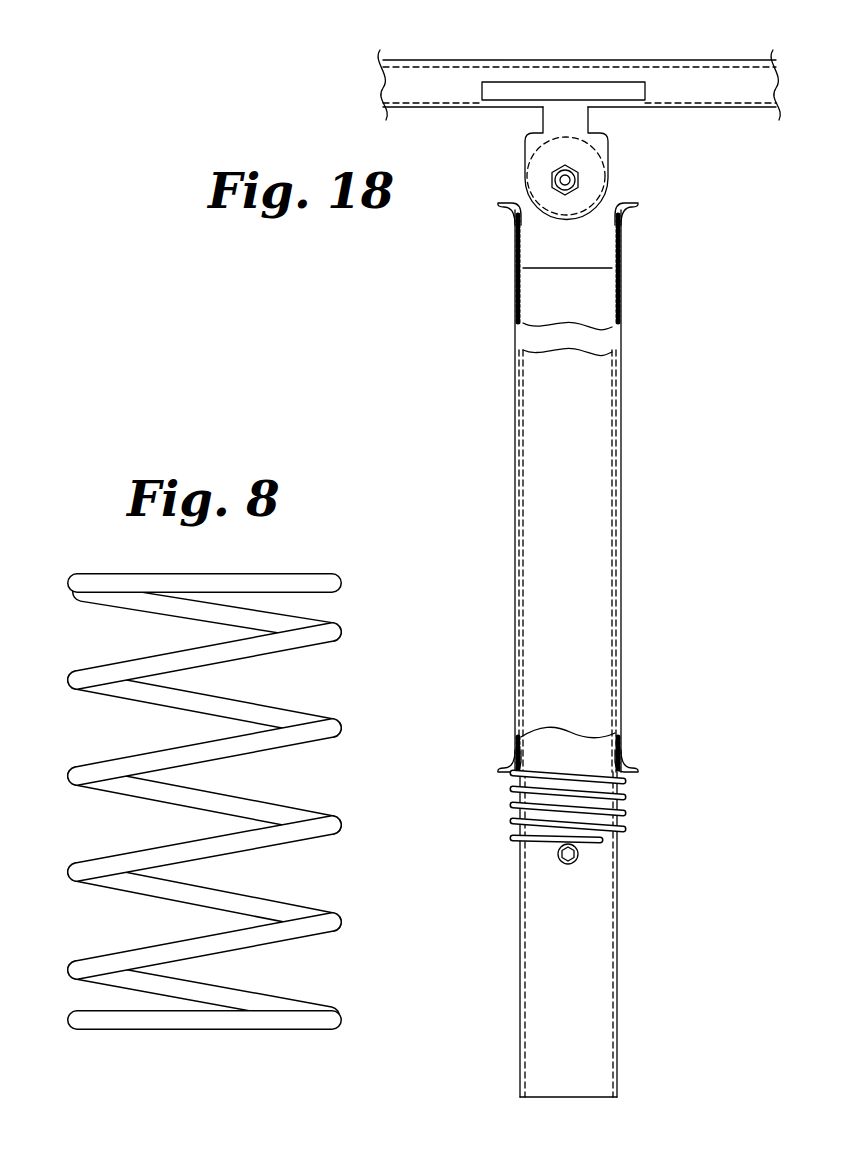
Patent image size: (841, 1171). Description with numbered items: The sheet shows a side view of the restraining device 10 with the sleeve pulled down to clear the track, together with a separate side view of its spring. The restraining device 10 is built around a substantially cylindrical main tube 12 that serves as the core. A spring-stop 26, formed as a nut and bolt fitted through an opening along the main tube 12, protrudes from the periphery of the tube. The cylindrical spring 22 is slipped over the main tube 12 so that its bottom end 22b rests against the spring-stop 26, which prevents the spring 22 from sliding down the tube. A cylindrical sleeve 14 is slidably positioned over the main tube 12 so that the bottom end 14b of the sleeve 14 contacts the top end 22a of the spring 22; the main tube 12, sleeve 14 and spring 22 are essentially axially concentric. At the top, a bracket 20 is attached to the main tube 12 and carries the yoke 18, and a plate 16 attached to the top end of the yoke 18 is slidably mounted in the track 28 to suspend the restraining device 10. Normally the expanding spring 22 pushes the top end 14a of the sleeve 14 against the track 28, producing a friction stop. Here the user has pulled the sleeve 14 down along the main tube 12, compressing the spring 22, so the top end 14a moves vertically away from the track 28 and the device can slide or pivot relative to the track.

In FIG. 18, the restraining device 10 is at (687, 921).
In FIG. 18, the main tube 12 is at (597, 335).
In FIG. 18, the sleeve 14 is at (508, 587).
In FIG. 18, the top end of the sleeve 14a is at (507, 206).
In FIG. 18, the bottom end of the sleeve 14b is at (512, 770).
In FIG. 18, the plate 16 is at (474, 93).
In FIG. 18, the yoke 18 is at (535, 121).
In FIG. 18, the bracket 20 is at (528, 266).
In FIG. 18, the spring 22 is at (636, 833).
In FIG. 8, the spring 22 is at (397, 880).
In FIG. 8, the top end of the spring 22a is at (296, 575).
In FIG. 8, the bottom end of the spring 22b is at (308, 1027).
In FIG. 18, the spring-stop 26 is at (544, 860).
In FIG. 18, the track 28 is at (657, 52).